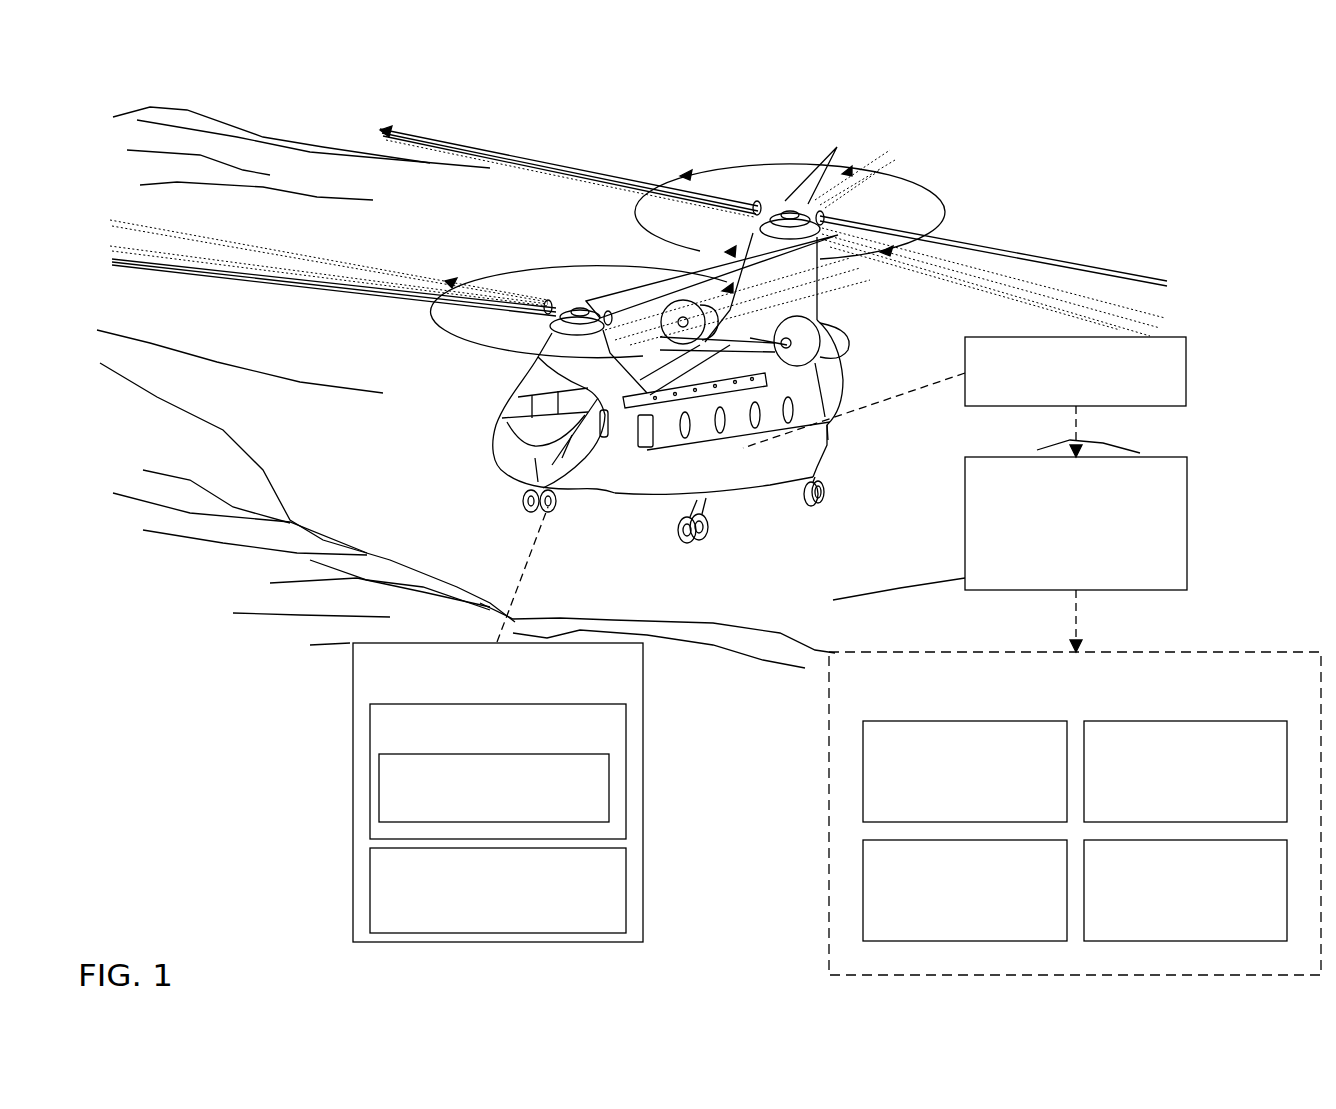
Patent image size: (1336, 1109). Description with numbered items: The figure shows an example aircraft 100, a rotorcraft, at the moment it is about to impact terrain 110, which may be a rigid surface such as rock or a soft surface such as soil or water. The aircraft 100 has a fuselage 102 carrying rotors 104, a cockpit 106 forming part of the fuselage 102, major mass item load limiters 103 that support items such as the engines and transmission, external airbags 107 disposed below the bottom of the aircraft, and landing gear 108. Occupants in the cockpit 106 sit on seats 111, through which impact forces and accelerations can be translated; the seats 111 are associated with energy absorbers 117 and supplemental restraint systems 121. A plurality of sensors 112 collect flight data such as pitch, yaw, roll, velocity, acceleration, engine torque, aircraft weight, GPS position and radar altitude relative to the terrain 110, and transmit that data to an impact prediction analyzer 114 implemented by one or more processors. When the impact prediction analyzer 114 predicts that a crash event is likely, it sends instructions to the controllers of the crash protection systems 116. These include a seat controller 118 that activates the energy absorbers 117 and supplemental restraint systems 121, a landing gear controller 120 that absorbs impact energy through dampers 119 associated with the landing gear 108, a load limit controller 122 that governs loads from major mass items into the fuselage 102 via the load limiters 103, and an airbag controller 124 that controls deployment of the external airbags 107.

The aircraft 100 is at (410, 104).
The fuselage 102 is at (470, 427).
The major mass item load limiters 103 is at (813, 448).
The rotors 104 is at (545, 176).
The cockpit 106 is at (498, 724).
The external airbags 107 is at (647, 450).
The landing gear 108 is at (820, 474).
The terrain 110 is at (217, 449).
The seat(s) 111 is at (498, 771).
The sensors 112 is at (964, 392).
The impact prediction analyzer 114 is at (1076, 529).
The crash protection systems 116 is at (1075, 813).
The energy absorber(s) 117 is at (494, 788).
The seat controller 118 is at (965, 771).
The damper(s) 119 is at (697, 538).
The landing gear controller 120 is at (965, 890).
The supplemental restraint system(s) 121 is at (498, 890).
The load limit controller 122 is at (1185, 771).
The airbag controller 124 is at (1185, 890).